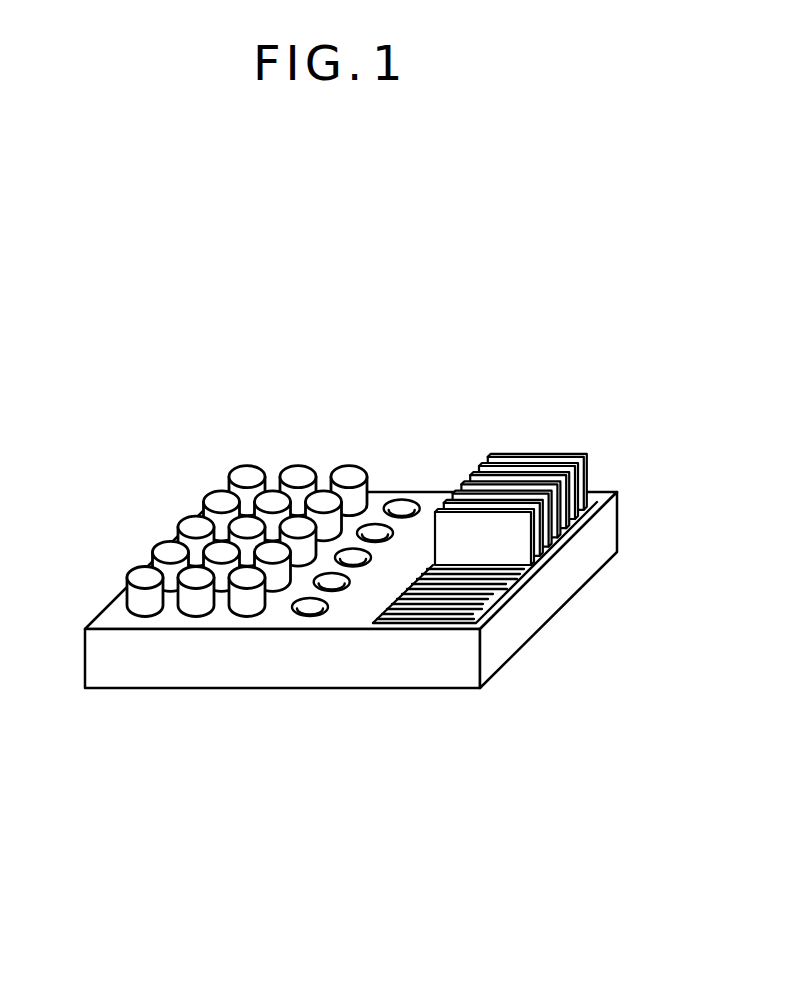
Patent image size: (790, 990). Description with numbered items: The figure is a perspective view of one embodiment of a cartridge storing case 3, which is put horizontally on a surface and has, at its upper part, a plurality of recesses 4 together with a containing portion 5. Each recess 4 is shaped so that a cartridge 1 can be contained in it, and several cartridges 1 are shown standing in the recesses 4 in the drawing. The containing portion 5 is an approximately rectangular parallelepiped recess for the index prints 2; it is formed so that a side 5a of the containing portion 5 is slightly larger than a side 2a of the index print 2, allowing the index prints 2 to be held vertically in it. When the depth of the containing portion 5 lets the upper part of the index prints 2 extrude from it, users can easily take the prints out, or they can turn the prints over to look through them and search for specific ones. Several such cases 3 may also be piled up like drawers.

The cartridge 1 is at (135, 480).
The index print 2 is at (544, 472).
The side of the index print 2a is at (580, 459).
The cartridge storing case 3 is at (232, 680).
The recess 4 is at (398, 507).
The containing portion 5 is at (514, 585).
The side of the containing portion 5a is at (395, 622).